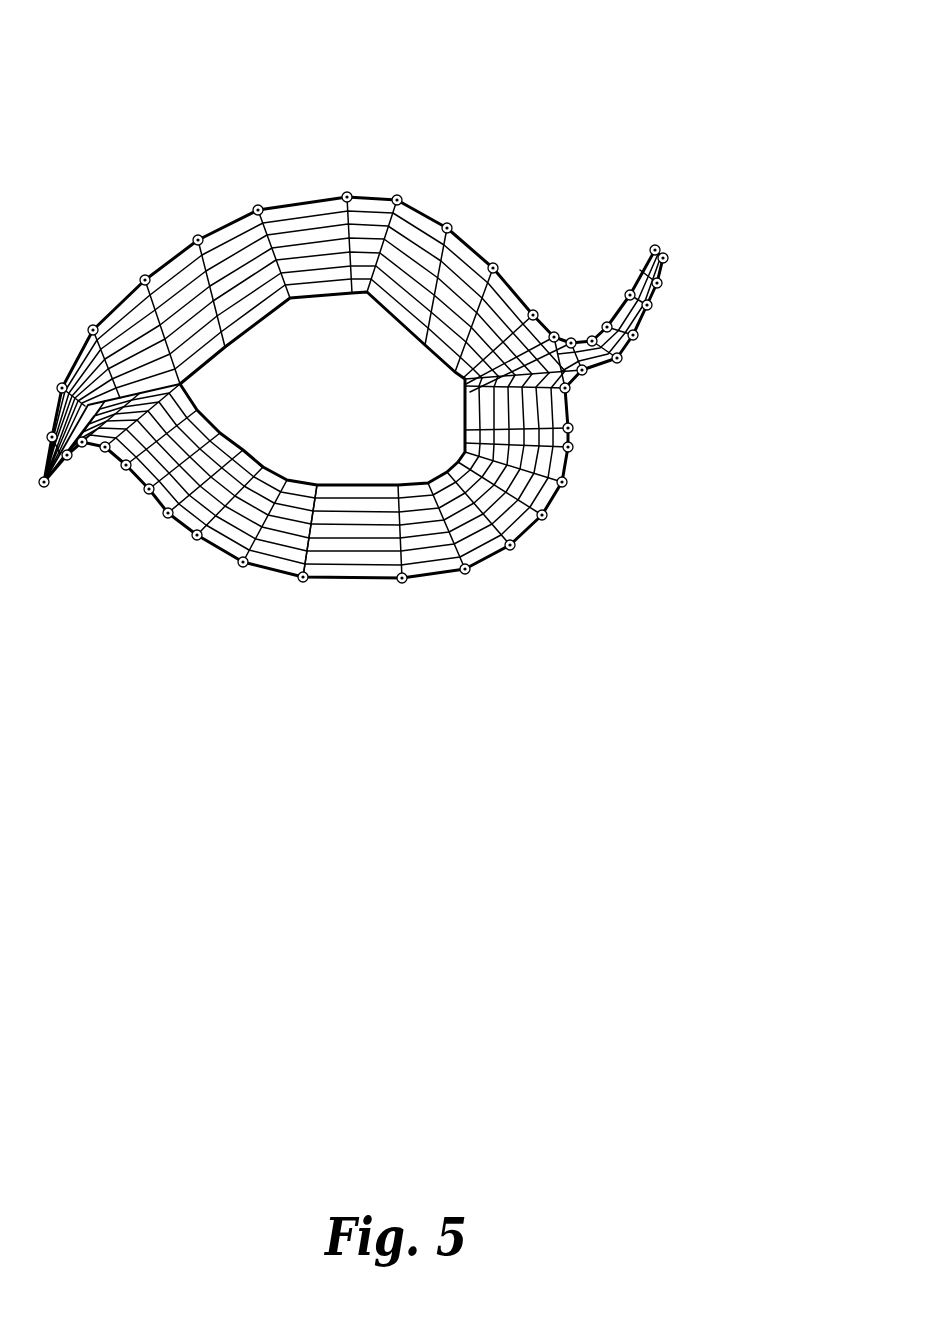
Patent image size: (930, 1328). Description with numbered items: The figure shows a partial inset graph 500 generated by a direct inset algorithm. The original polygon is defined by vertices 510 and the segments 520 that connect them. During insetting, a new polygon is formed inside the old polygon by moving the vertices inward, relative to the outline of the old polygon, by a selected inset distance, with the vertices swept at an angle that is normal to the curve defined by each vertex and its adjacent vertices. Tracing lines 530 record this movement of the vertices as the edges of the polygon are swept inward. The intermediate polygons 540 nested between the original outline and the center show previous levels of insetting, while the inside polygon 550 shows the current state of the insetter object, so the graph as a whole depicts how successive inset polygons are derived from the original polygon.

The partial inset graph 500 is at (760, 121).
The vertices 510 is at (197, 240).
The segments 520 is at (118, 304).
The tracing lines 530 is at (492, 290).
The intermediate polygons 540 is at (323, 238).
The inside polygon 550 is at (360, 486).